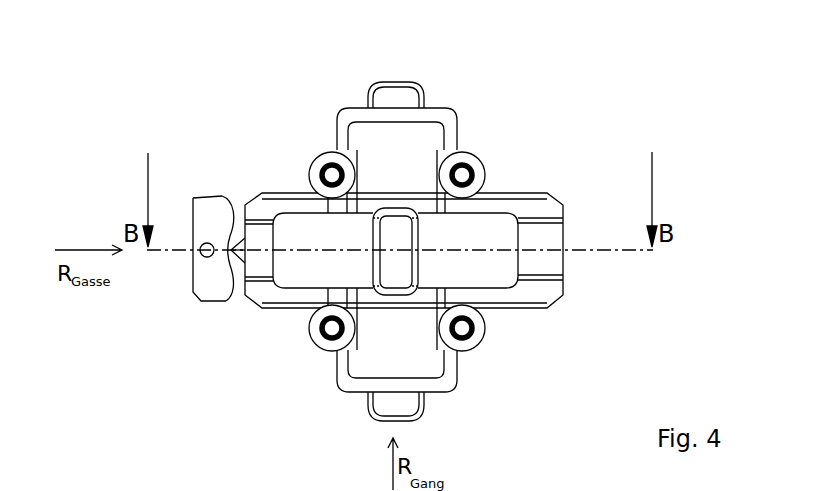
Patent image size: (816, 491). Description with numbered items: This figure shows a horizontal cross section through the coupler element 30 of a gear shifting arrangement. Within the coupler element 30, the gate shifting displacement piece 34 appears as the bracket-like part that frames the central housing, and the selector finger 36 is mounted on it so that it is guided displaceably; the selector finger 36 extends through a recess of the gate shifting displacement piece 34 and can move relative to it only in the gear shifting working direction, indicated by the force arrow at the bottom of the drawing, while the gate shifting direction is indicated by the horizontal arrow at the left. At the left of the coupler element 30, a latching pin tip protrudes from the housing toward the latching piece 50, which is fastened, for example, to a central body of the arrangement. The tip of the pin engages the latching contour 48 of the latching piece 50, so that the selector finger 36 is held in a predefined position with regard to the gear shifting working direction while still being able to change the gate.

The coupler element 30 is at (611, 62).
The gate shifting displacement piece 34 is at (445, 382).
The selector finger 36 is at (400, 237).
The latching contour 48 is at (229, 231).
The latching piece 50 is at (207, 299).